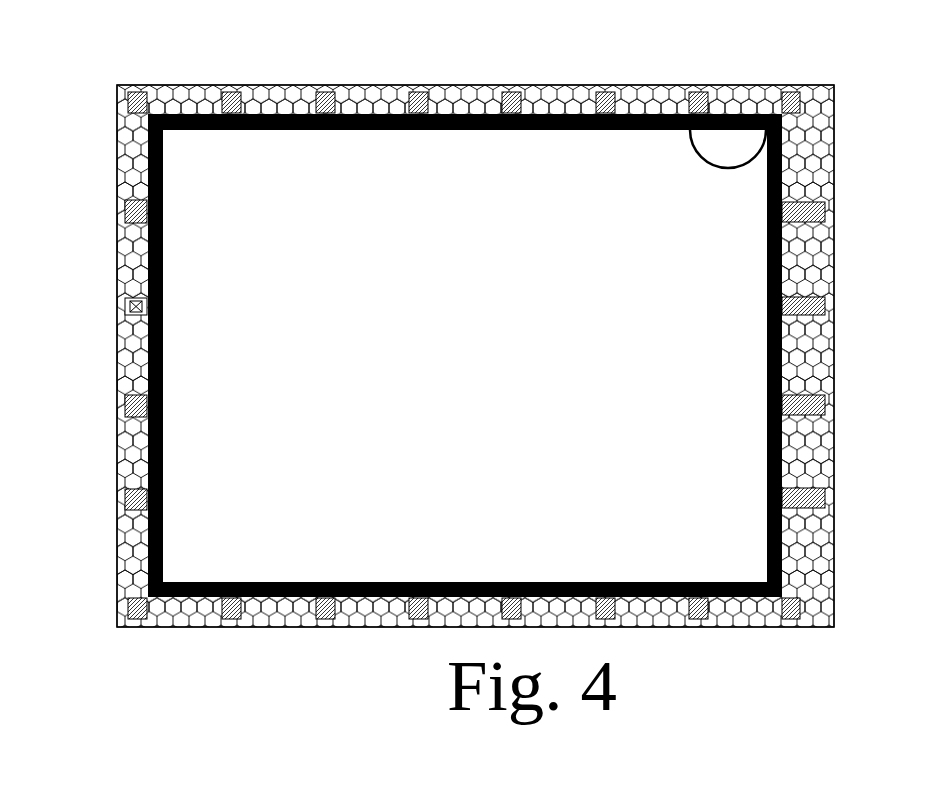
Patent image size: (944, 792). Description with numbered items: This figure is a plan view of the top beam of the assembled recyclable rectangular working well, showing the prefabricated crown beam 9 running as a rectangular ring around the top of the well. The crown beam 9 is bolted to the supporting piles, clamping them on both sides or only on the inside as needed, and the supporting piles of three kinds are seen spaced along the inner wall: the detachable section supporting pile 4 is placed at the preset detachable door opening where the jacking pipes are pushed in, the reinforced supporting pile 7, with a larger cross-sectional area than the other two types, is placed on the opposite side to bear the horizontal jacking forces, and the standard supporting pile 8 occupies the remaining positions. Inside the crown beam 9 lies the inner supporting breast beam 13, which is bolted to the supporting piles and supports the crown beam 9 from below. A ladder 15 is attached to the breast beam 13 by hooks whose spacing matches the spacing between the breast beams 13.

The detachable section supporting pile 4 is at (117, 398).
The reinforced supporting pile 7 is at (828, 202).
The standard supporting pile 8 is at (470, 68).
The prefabricated crown beam 9 is at (555, 98).
The inner supporting breast beam 13 is at (556, 131).
The ladder 15 is at (722, 168).